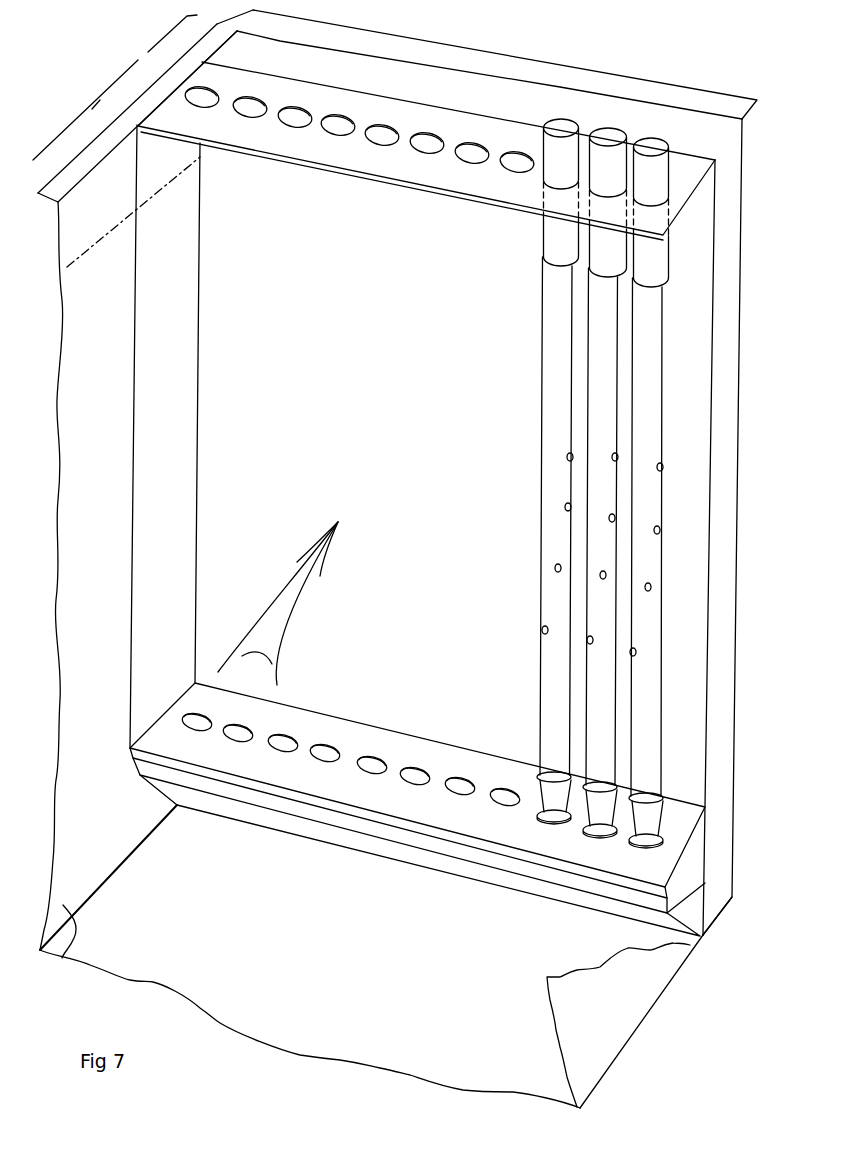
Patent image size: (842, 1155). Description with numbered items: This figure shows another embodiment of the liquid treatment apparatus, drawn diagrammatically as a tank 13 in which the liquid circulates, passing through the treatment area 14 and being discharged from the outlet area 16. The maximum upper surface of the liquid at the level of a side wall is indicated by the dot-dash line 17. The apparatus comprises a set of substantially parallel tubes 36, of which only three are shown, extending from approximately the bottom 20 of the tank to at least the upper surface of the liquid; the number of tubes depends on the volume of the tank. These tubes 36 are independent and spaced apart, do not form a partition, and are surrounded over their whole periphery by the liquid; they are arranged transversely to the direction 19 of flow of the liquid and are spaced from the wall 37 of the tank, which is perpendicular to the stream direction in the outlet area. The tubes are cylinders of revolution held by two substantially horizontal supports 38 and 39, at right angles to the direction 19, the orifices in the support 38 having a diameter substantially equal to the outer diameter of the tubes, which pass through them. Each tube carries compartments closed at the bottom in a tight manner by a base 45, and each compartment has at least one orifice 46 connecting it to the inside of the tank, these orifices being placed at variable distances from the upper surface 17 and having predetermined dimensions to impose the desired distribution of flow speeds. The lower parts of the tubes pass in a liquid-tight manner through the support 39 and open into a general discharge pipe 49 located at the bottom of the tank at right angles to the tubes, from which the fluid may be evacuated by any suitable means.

The tank 13 is at (63, 957).
The treatment area 14 is at (38, 147).
The outlet area 16 is at (138, 52).
The upper surface of the liquid 17 is at (113, 233).
The direction of flow of the liquid 19 is at (258, 628).
The bottom of the tank 20 is at (218, 988).
The tubes 36 is at (598, 375).
The wall of the tank 37 is at (537, 94).
The support 38 is at (337, 153).
The support 39 is at (153, 744).
The base 45 is at (663, 800).
The orifice 46 is at (547, 622).
The general discharge pipe 49 is at (697, 900).